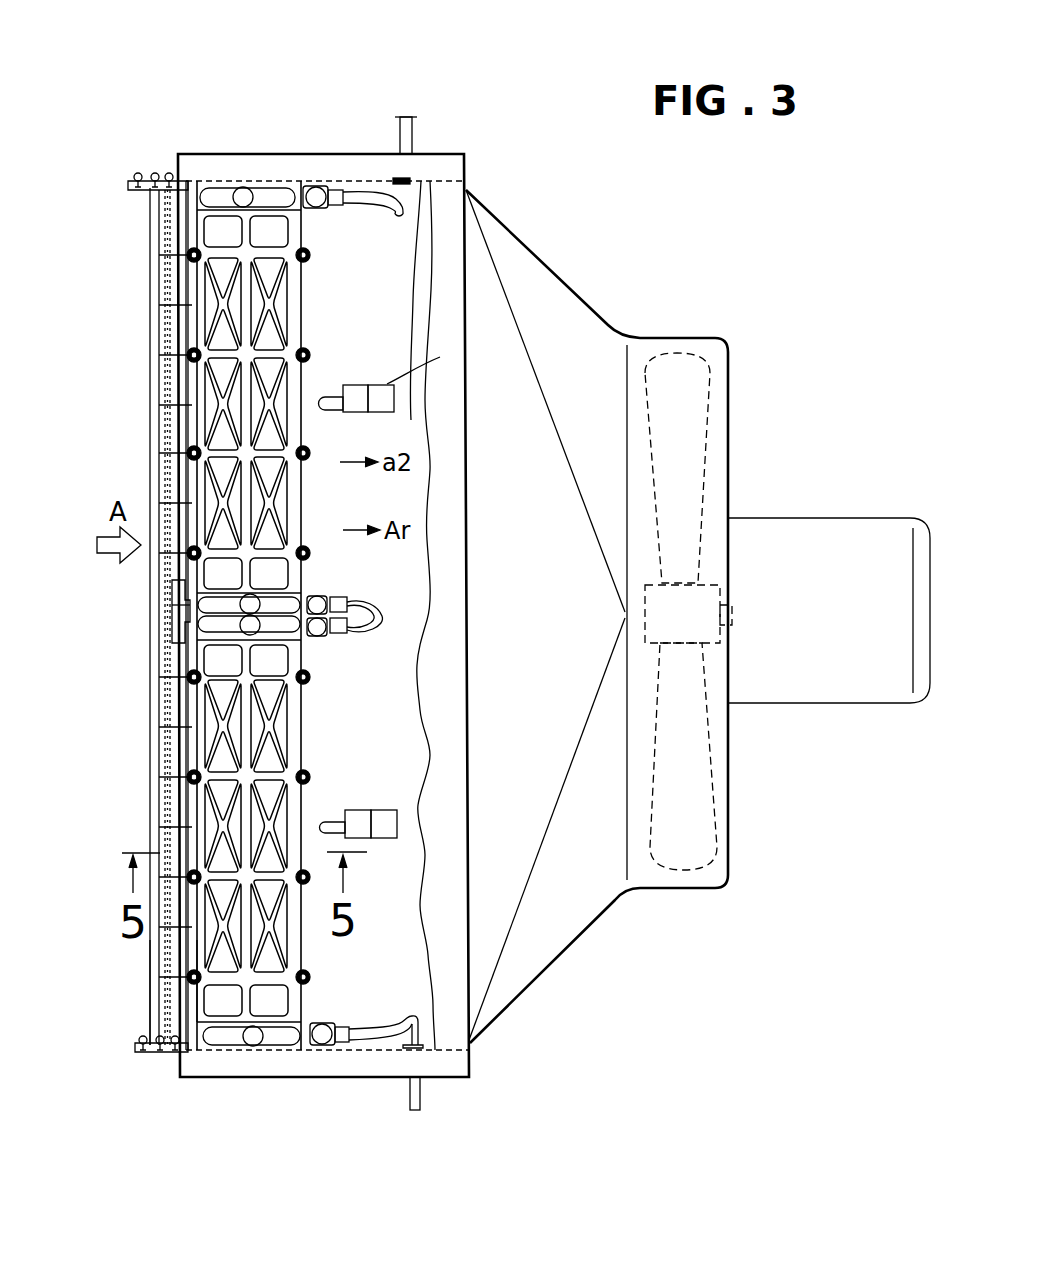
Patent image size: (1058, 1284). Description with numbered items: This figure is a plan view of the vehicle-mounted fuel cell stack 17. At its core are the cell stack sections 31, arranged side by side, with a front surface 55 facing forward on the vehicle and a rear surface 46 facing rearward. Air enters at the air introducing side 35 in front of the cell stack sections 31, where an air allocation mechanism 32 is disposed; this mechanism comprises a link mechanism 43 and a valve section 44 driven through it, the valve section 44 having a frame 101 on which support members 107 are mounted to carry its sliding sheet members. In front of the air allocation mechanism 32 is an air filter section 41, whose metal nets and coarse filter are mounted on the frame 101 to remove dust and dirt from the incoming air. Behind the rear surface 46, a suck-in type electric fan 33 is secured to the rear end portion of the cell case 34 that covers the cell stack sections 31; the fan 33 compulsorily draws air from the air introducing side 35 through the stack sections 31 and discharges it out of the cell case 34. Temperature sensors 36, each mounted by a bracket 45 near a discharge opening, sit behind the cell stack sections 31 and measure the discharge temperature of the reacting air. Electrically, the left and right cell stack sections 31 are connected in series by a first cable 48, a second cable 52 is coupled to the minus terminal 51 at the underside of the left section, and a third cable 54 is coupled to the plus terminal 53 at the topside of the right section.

The fuel cell stack 17 is at (317, 112).
The cell stack sections 31 is at (312, 433).
The air allocation mechanism 32 is at (423, 217).
The fan 33 is at (803, 476).
The cell case 34 is at (583, 297).
The air introducing side 35 is at (158, 727).
The temperature sensors 36 is at (198, 313).
The air filter section 41 is at (152, 373).
The link mechanism 43 is at (168, 1062).
The valve section 44 is at (200, 945).
The bracket 45 is at (330, 407).
The rear surface 46 is at (305, 507).
The first cable 48 is at (362, 633).
The minus terminal 51 is at (312, 1047).
The second cable 52 is at (420, 1092).
The plus terminal 53 is at (305, 182).
The third cable 54 is at (412, 133).
The front surface 55 is at (175, 583).
The frame 101 is at (168, 959).
The support members 107 is at (188, 254).